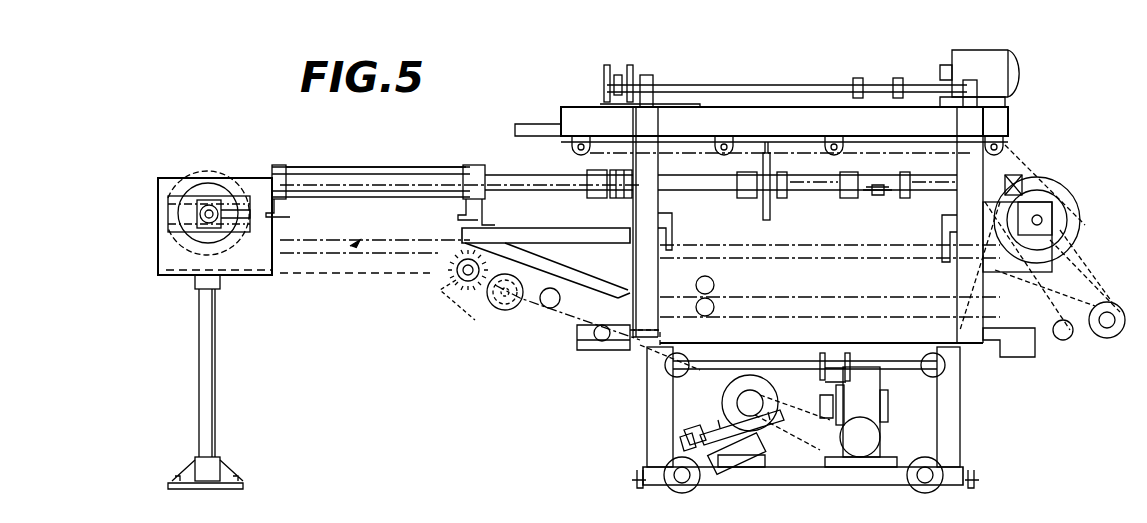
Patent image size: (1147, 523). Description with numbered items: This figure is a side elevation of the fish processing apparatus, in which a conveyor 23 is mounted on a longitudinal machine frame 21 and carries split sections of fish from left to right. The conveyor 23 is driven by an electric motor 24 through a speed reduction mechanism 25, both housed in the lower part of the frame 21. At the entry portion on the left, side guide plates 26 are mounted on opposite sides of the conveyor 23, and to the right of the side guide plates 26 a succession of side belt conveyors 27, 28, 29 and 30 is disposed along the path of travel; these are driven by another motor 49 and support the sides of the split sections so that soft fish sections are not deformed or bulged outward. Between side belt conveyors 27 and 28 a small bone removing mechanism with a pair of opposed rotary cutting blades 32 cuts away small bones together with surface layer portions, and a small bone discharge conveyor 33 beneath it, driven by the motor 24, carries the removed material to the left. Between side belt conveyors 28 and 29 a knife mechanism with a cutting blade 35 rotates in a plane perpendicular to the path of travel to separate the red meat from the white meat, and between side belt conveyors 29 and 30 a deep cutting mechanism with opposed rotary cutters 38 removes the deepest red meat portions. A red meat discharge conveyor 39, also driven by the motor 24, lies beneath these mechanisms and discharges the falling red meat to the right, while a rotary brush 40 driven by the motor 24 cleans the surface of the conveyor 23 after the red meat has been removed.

The longitudinal machine frame 21 is at (647, 388).
The conveyor 23 is at (376, 235).
The electric motor 24 is at (747, 416).
The speed reduction mechanism 25 is at (856, 400).
The side guide plates 26 is at (320, 168).
The side belt conveyor 27 is at (472, 153).
The side belt conveyor 28 is at (710, 170).
The side belt conveyor 29 is at (832, 172).
The side belt conveyor 30 is at (930, 170).
The rotary cutting blades 32 is at (575, 122).
The small bone discharge conveyor 33 is at (532, 262).
The cutting blade 35 is at (770, 180).
The rotary cutters 38 is at (880, 198).
The red meat discharge conveyor 39 is at (948, 340).
The rotary brush 40 is at (455, 283).
The motor 49 is at (993, 68).